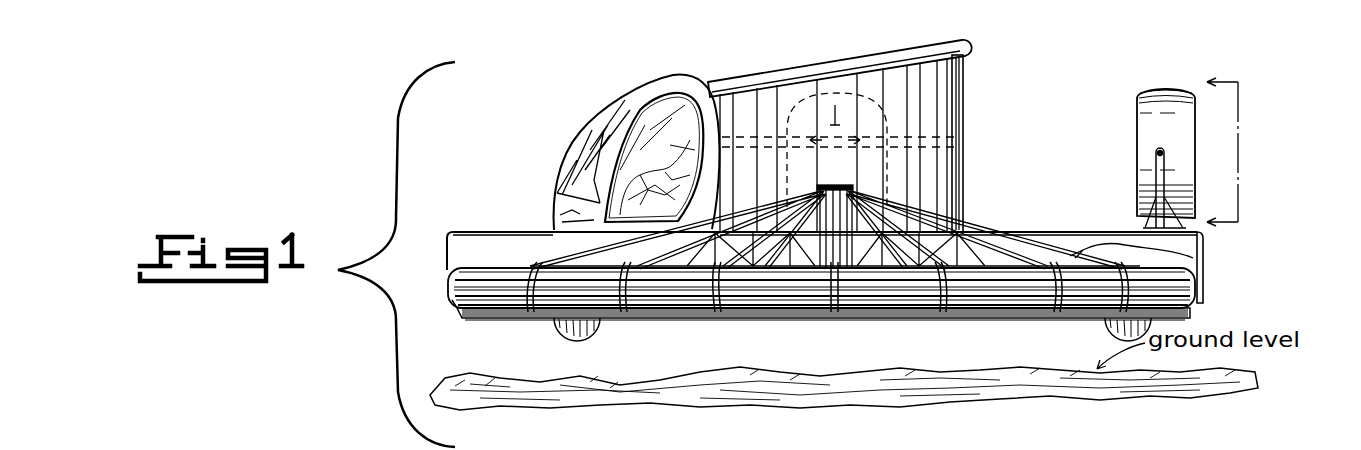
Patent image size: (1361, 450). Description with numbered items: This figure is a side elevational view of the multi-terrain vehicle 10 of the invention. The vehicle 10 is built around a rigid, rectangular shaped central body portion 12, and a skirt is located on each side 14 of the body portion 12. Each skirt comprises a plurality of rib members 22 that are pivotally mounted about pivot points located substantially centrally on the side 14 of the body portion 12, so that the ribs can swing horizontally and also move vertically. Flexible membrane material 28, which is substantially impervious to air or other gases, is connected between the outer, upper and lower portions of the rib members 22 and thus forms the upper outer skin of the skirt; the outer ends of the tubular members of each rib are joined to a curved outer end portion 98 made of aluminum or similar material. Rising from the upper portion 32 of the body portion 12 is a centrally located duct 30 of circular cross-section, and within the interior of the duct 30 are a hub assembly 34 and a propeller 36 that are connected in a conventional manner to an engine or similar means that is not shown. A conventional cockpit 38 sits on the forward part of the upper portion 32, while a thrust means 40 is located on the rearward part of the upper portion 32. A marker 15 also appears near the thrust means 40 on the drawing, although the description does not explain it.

The multi-terrain vehicle 10 is at (1010, 95).
The central body portion 12 is at (1215, 255).
The side of the body portion 14 is at (477, 232).
The section line 15 is at (1243, 151).
The rib members 22 is at (584, 256).
The flexible membrane material 28 is at (667, 283).
The duct 30 is at (960, 163).
The upper portion of the body portion 32 is at (1080, 232).
The hub assembly 34 is at (808, 62).
The propeller 36 is at (753, 80).
The cockpit 38 is at (574, 132).
The thrust means 40 is at (1137, 153).
The curved outer end portion 98 is at (527, 290).